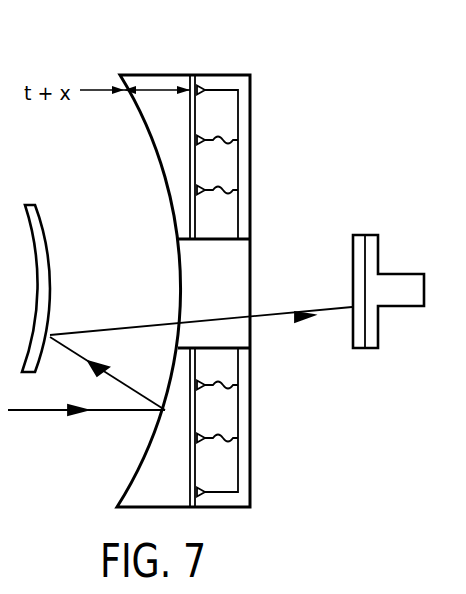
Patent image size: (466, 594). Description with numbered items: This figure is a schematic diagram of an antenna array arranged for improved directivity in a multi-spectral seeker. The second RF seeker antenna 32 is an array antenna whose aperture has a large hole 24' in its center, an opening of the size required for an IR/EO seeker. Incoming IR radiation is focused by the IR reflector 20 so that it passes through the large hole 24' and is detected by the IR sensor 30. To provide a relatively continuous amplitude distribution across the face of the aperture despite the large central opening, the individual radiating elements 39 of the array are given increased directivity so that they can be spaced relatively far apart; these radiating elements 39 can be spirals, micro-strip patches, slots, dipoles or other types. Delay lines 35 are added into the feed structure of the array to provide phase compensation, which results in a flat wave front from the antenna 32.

The IR reflector 20 is at (55, 262).
The large hole 24' is at (242, 289).
The IR sensor 30 is at (386, 278).
The second RF seeker antenna 32 is at (222, 457).
The delay lines 35 is at (207, 137).
The radiating elements 39 is at (203, 87).